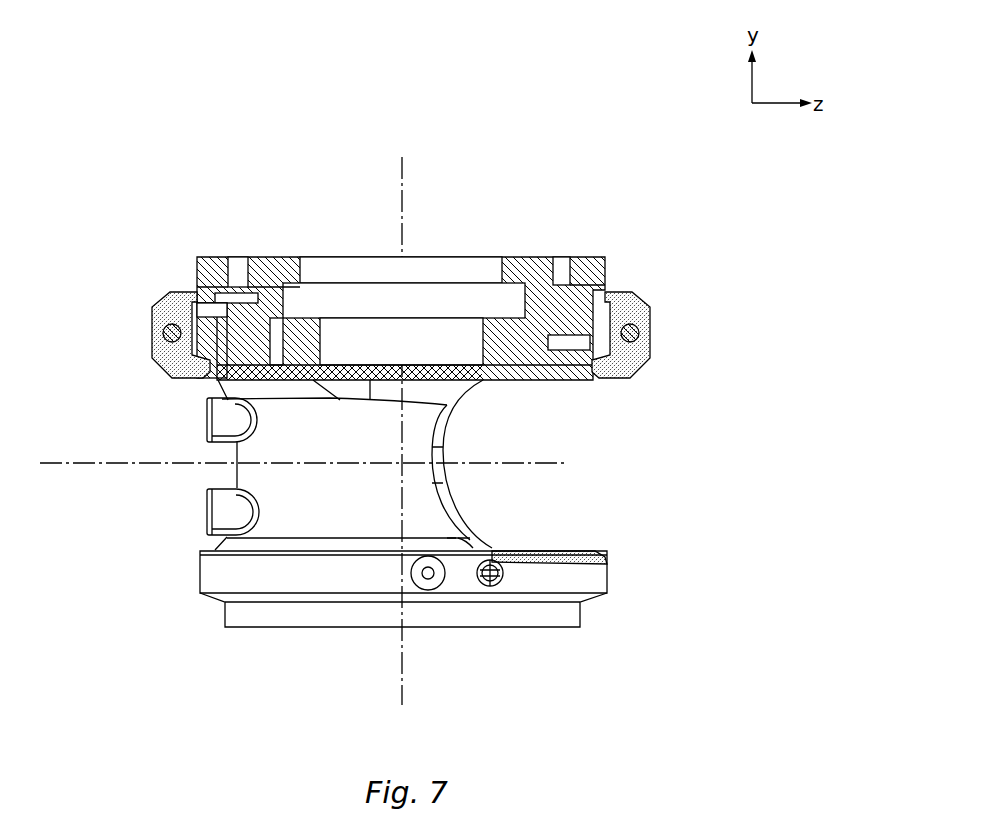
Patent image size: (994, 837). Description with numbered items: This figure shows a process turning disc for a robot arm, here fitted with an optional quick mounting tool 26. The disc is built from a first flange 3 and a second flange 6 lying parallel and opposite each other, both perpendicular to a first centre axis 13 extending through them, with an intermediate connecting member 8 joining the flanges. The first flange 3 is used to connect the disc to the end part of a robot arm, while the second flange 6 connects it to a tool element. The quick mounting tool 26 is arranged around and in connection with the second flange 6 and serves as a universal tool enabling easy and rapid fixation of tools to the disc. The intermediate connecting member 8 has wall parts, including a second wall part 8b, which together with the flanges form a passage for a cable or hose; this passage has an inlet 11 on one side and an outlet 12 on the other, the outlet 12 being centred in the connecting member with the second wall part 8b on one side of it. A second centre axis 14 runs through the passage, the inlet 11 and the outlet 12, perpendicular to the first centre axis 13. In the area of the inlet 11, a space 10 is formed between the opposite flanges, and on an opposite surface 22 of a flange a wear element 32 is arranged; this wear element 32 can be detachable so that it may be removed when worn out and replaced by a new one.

The first centre axis 13 is at (402, 200).
The quick mounting tool 26 is at (153, 305).
The second flange 6 is at (212, 352).
The second centre axis 14 is at (60, 463).
The outlet 12 is at (129, 502).
The intermediate connecting member 8 is at (220, 479).
The first flange 3 is at (217, 576).
The second wall part 8b is at (328, 508).
The space 10 is at (493, 452).
The opposite surface 22 is at (565, 393).
The inlet 11 is at (720, 510).
The wear element 32 is at (607, 559).